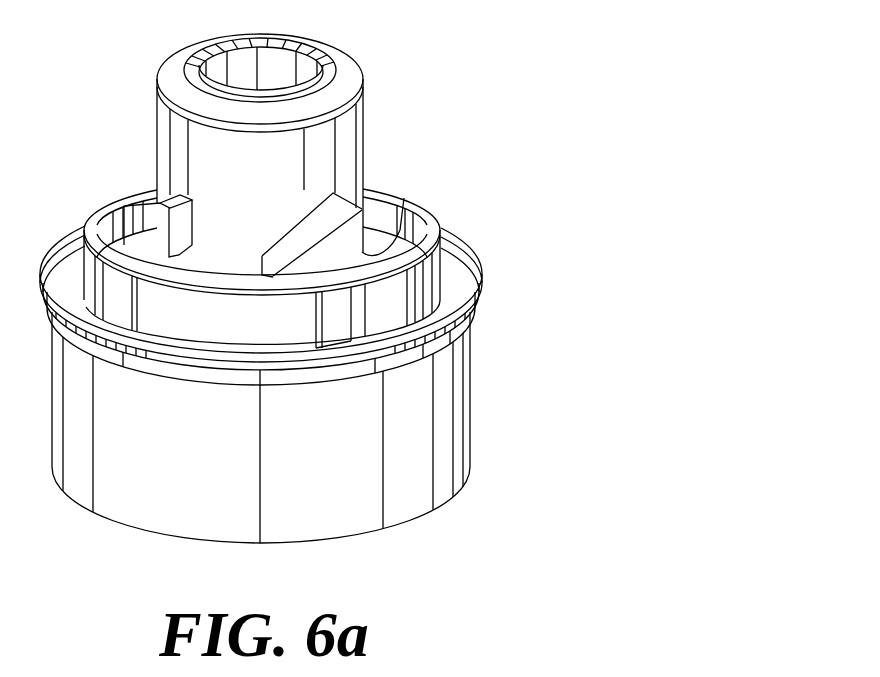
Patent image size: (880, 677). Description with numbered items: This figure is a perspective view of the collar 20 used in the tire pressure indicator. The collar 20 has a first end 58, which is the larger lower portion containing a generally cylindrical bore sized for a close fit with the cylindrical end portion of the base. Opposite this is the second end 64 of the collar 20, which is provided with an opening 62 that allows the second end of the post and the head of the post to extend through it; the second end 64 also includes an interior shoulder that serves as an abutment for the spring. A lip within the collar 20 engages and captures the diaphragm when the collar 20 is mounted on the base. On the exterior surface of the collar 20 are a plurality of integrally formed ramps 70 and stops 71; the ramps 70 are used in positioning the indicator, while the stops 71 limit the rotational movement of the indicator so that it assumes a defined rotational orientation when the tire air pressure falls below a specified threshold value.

The collar 20 is at (314, 271).
The first end 58 is at (481, 401).
The opening 62 is at (271, 78).
The second end 64 is at (317, 126).
The ramps 70 is at (318, 212).
The stops 71 is at (177, 227).